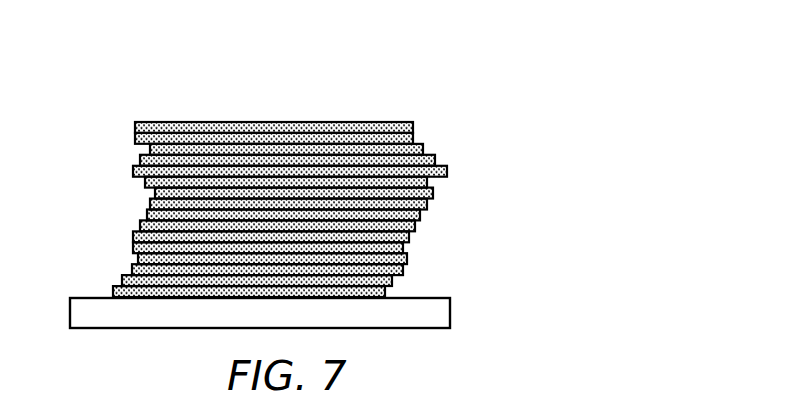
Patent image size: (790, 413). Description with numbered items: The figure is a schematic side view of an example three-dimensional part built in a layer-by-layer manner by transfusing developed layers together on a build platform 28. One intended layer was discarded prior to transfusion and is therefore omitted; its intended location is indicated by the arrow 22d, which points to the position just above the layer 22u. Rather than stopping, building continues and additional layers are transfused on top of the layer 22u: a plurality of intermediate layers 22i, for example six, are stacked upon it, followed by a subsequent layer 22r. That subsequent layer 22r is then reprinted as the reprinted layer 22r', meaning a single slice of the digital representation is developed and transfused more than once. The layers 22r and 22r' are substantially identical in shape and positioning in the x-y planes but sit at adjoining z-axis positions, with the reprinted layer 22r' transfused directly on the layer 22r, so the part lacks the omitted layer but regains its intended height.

The reprinted layer 22r' is at (312, 119).
The subsequent layer 22r is at (311, 136).
The intermediate layers 22i is at (321, 179).
The arrow 22d is at (458, 203).
The layer 22u is at (422, 208).
The build platform 28 is at (440, 312).